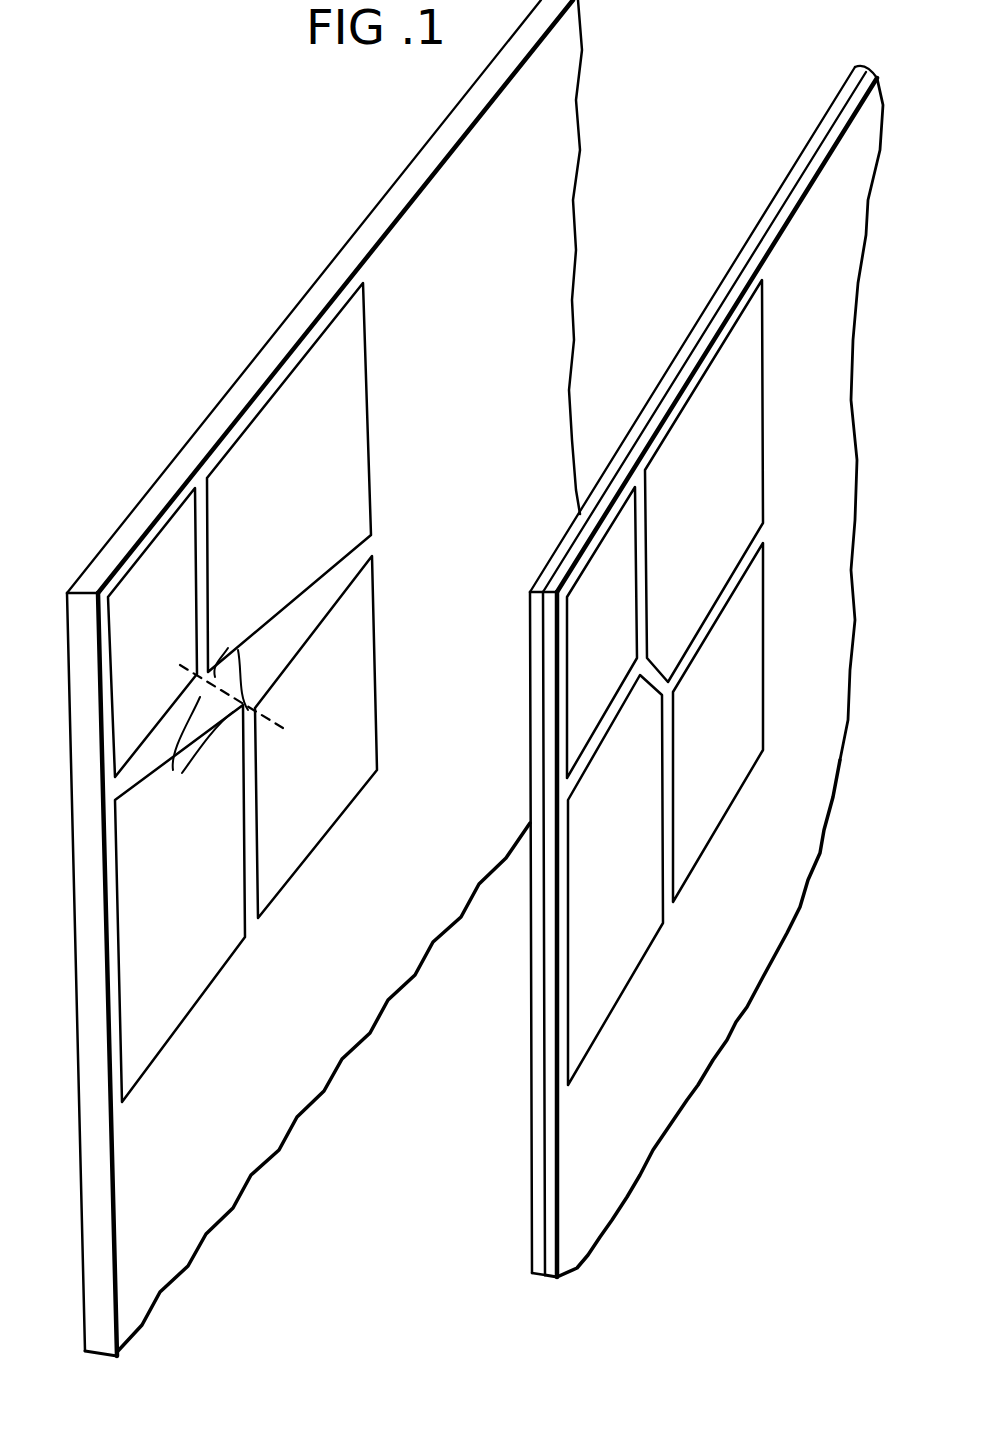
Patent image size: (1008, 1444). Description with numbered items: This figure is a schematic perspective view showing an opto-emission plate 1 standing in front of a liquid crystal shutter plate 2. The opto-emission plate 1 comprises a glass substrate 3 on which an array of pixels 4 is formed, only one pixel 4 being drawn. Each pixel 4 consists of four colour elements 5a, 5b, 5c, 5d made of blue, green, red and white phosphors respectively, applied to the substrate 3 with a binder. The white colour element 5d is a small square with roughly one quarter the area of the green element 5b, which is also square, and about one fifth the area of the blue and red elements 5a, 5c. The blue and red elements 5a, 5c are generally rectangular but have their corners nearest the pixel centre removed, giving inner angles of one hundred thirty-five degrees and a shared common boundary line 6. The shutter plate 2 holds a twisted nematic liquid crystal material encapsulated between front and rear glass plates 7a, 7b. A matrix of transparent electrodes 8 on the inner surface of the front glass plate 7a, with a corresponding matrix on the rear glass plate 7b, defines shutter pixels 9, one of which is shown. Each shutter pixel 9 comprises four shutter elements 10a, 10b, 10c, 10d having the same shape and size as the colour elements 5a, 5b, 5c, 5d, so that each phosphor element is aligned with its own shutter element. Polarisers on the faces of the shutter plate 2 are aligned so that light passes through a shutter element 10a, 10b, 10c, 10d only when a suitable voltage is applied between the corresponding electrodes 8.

The opto-emission plate 1 is at (345, 188).
The liquid crystal shutter plate 2 is at (769, 198).
The glass substrate 3 is at (72, 625).
The pixel 4 is at (385, 403).
The blue colour element 5a is at (312, 510).
The green colour element 5b is at (328, 776).
The red colour element 5c is at (188, 876).
The white colour element 5d is at (170, 646).
The common boundary line 6 is at (268, 714).
The front glass plate 7a is at (553, 1173).
The rear glass plate 7b is at (530, 1192).
The transparent electrodes 8 is at (597, 527).
The shutter pixel 9 is at (779, 428).
The shutter element 10a is at (744, 501).
The shutter element 10b is at (752, 724).
The shutter element 10c is at (653, 858).
The shutter element 10d is at (634, 631).